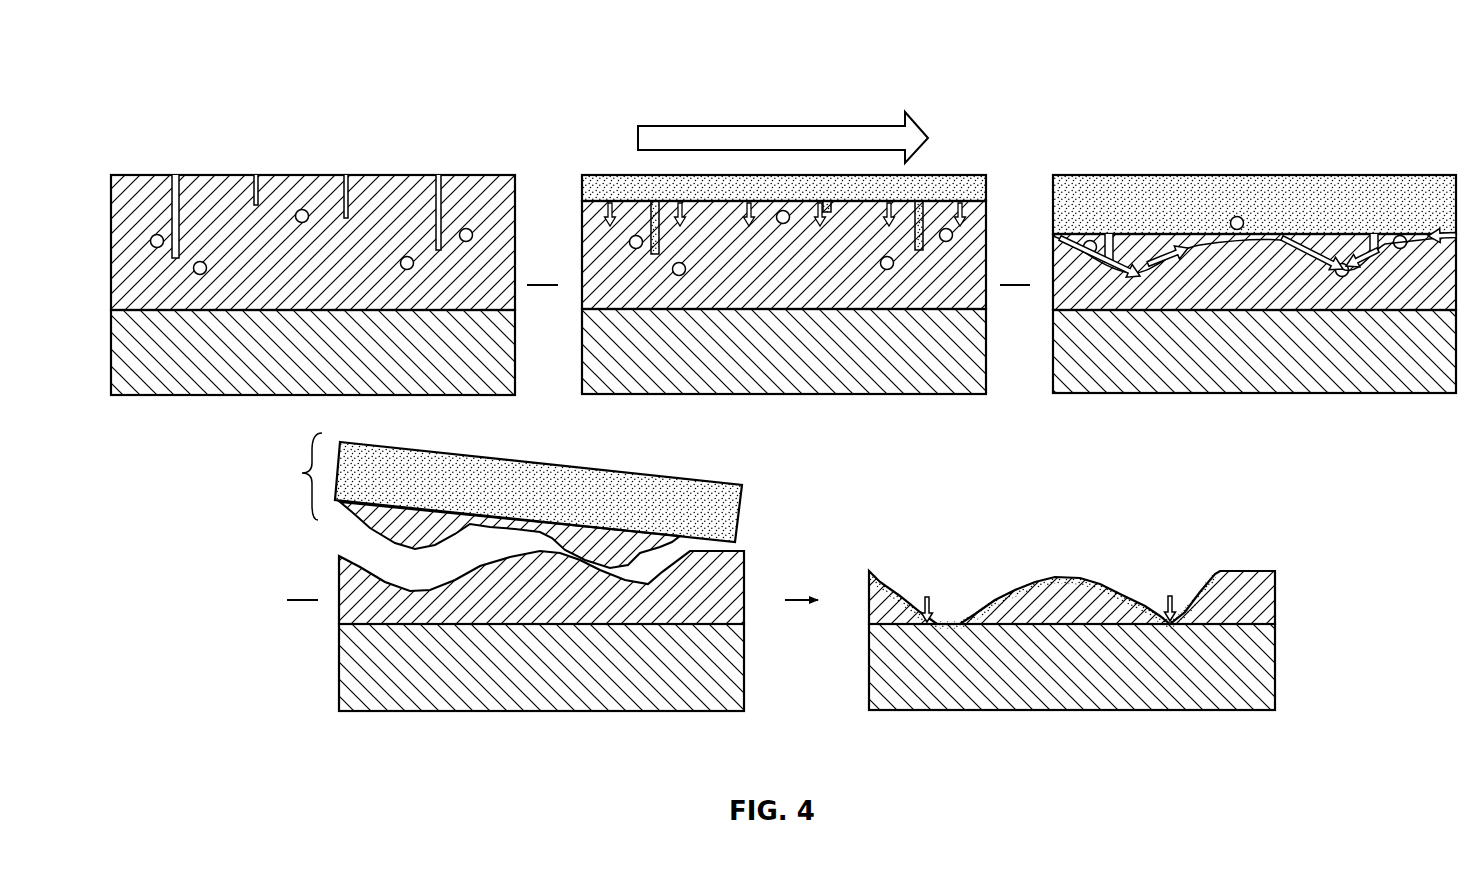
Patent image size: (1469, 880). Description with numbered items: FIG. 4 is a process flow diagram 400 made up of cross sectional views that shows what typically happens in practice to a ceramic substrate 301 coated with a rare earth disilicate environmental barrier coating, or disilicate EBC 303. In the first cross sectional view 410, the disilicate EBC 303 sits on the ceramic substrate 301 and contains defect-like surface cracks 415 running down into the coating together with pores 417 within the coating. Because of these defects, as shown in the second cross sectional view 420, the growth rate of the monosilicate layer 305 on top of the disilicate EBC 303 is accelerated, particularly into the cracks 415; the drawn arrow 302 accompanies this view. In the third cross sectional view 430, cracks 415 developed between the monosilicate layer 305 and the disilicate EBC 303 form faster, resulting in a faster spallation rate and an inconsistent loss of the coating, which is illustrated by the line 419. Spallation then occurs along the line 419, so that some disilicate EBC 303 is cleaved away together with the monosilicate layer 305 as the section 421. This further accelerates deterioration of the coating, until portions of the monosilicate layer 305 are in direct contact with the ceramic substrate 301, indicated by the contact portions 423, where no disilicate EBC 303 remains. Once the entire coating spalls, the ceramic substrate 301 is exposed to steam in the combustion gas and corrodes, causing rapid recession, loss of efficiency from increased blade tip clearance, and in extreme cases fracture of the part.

The process flow diagram 400 is at (208, 40).
The cross sectional view 410 is at (194, 96).
The cross sectional view 420 is at (940, 78).
The cross sectional view 430 is at (1375, 127).
The ceramic substrate 301 is at (335, 365).
The direction of relative motion 302 is at (777, 124).
The disilicate EBC 303 is at (335, 282).
The monosilicate layer 305 is at (606, 180).
The surface cracks 415 is at (178, 201).
The pores 417 is at (302, 209).
The line 419 is at (1160, 250).
The section 421 is at (300, 470).
The contact portions 423 is at (947, 610).